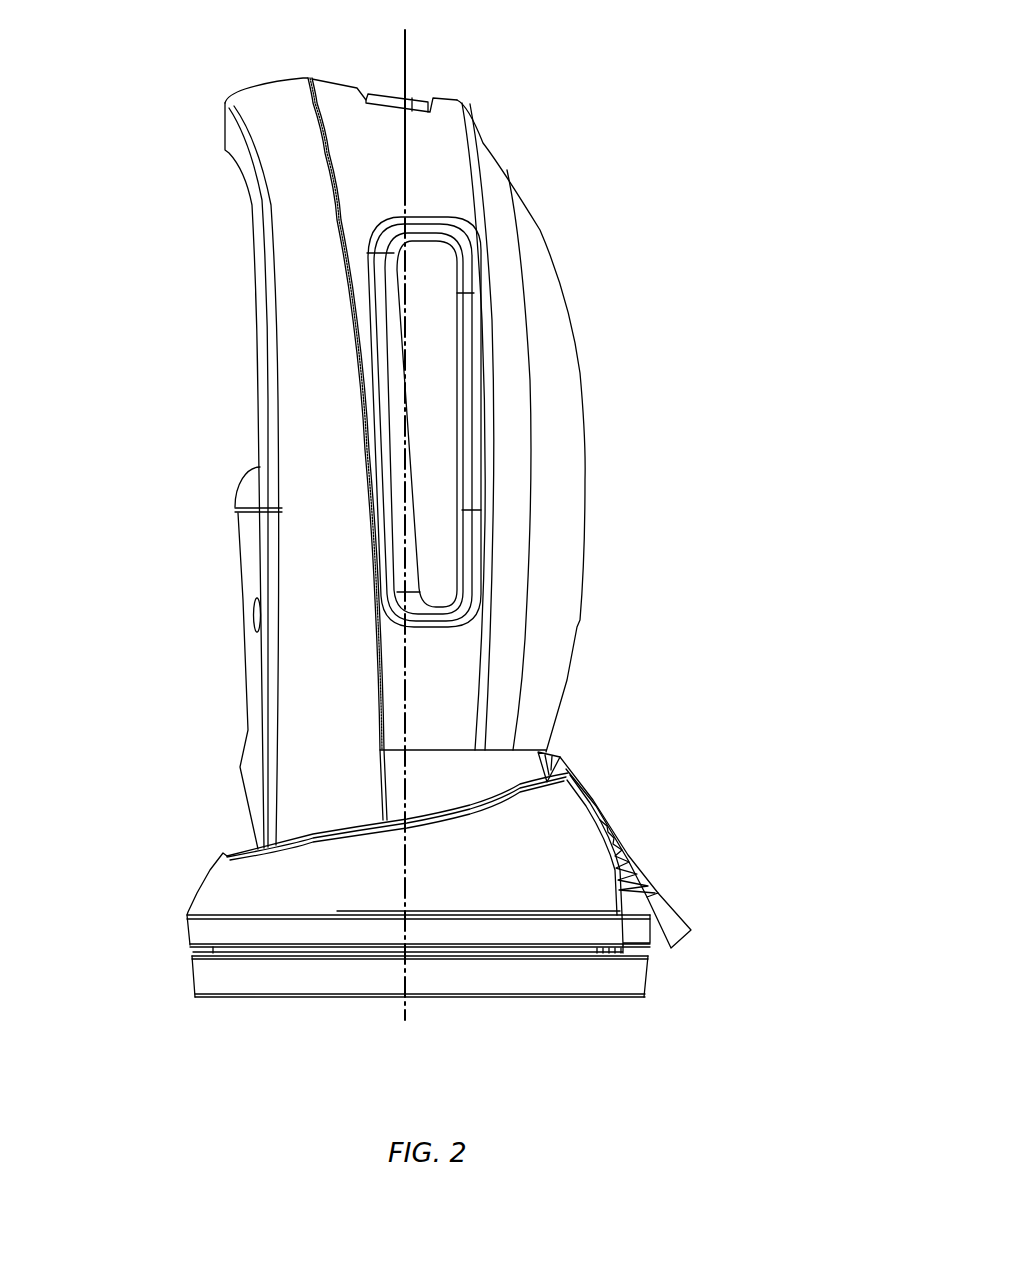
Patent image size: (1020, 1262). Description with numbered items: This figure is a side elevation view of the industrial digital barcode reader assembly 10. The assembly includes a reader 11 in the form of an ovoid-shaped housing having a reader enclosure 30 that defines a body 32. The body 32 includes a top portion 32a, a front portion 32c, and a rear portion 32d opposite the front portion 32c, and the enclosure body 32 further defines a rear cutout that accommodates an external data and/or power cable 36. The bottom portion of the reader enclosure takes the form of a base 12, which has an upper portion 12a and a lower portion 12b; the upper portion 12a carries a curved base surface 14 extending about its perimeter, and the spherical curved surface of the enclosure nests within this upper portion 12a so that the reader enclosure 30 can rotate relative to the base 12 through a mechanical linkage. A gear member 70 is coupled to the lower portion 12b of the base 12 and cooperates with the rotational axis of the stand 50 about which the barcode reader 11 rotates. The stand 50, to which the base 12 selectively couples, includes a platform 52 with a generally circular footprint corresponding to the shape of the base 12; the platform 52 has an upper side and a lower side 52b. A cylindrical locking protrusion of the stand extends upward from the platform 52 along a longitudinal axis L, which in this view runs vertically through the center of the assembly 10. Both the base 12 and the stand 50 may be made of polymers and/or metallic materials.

The barcode reader assembly 10 is at (655, 330).
The reader 11 is at (193, 516).
The base 12 is at (607, 843).
The upper portion 12a is at (587, 798).
The lower portion 12b is at (635, 935).
The curved base surface 14 is at (223, 882).
The reader enclosure 30 is at (532, 253).
The body 32 is at (485, 145).
The top portion 32a is at (264, 57).
The front portion 32c is at (205, 217).
The rear portion 32d is at (622, 489).
The external data and/or power cable 36 is at (673, 925).
The stand 50 is at (640, 980).
The platform 52 is at (203, 977).
The lower side 52b is at (262, 1012).
The gear member 70 is at (210, 950).
The longitudinal axis L is at (407, 63).